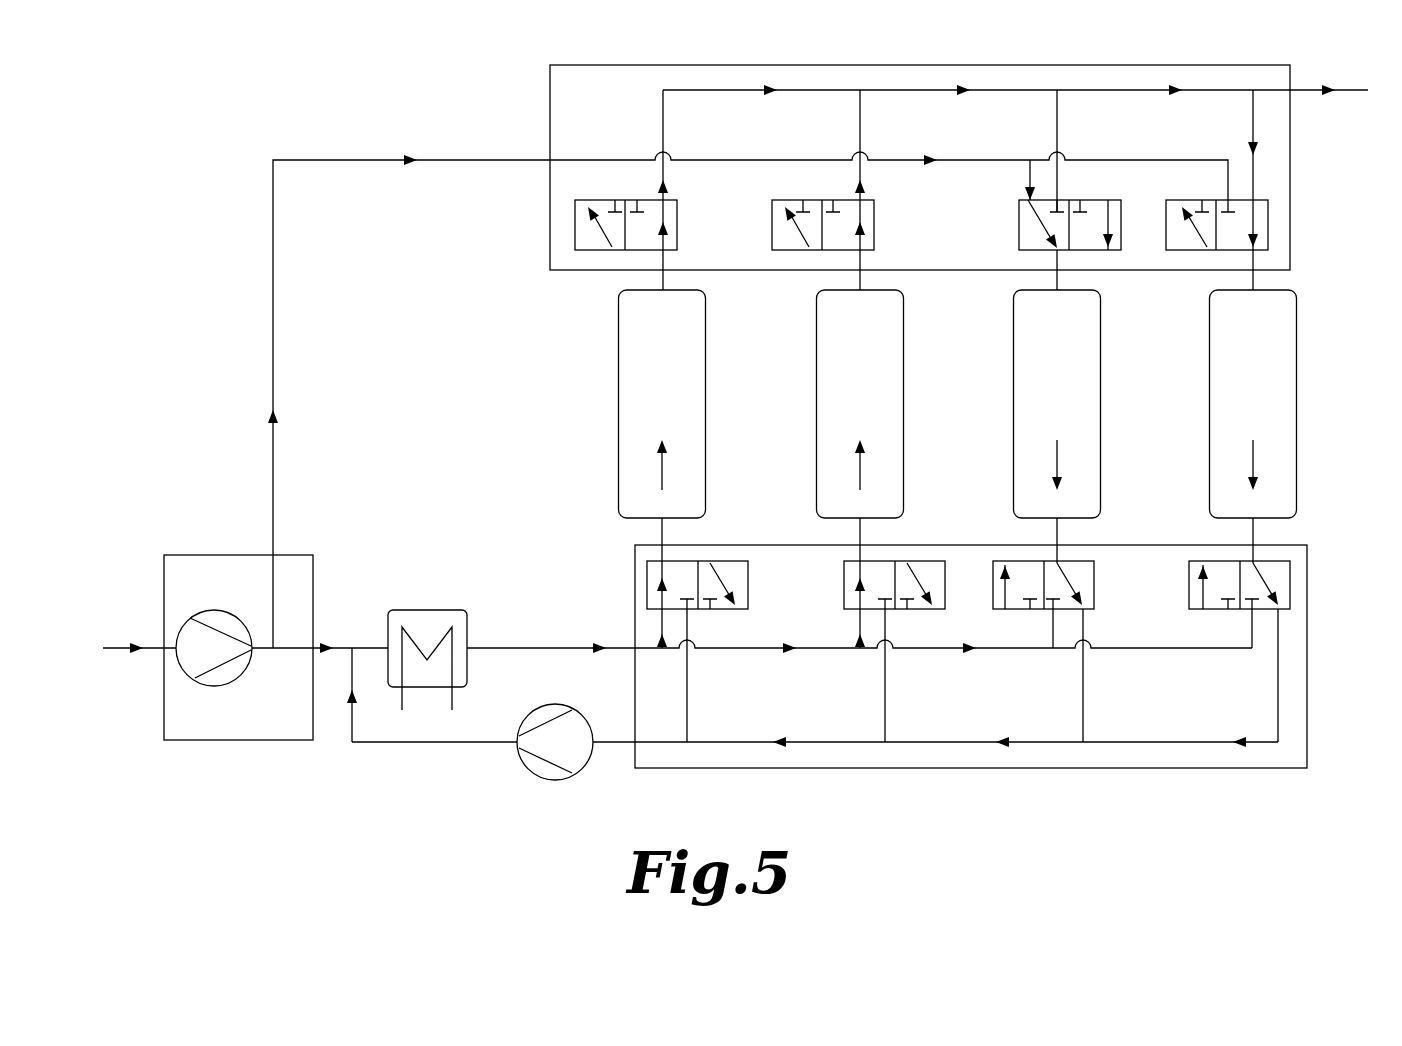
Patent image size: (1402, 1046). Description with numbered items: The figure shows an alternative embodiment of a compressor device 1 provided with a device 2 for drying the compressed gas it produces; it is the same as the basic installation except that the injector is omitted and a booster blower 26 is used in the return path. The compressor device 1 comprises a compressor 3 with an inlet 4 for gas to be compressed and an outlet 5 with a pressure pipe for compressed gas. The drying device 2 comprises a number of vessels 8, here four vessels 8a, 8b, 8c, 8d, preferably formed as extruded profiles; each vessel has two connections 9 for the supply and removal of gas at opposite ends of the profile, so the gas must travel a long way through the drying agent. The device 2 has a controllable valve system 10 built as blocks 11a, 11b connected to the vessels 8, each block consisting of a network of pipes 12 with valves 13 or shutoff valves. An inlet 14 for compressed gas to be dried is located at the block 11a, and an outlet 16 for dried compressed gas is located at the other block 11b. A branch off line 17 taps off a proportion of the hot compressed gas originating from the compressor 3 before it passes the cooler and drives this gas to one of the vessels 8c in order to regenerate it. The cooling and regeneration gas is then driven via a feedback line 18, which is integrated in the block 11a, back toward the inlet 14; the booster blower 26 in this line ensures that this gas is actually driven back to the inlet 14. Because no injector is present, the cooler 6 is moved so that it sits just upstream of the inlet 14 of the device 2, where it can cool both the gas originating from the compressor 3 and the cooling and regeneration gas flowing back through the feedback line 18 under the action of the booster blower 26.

The compressor device 1 is at (168, 110).
The device for drying compressed gas 2 is at (1358, 742).
The compressor 3 is at (214, 613).
The inlet 4 is at (117, 648).
The outlet 5 is at (262, 648).
The cooler 6 is at (423, 627).
The vessels 8 is at (545, 421).
The vessel 8a is at (630, 368).
The vessel 8b is at (835, 368).
The vessel 8c is at (1033, 368).
The vessel 8d is at (1228, 368).
The connections 9 is at (662, 289).
The controllable valve system 10 is at (1315, 270).
The block 11a is at (635, 768).
The block 11b is at (550, 88).
The pipes 12 is at (900, 160).
The valves 13 is at (803, 200).
The inlet 14 is at (632, 648).
The outlet 16 is at (1291, 90).
The branch off line 17 is at (273, 305).
The feedback line 18 is at (952, 742).
The booster blower 26 is at (520, 760).